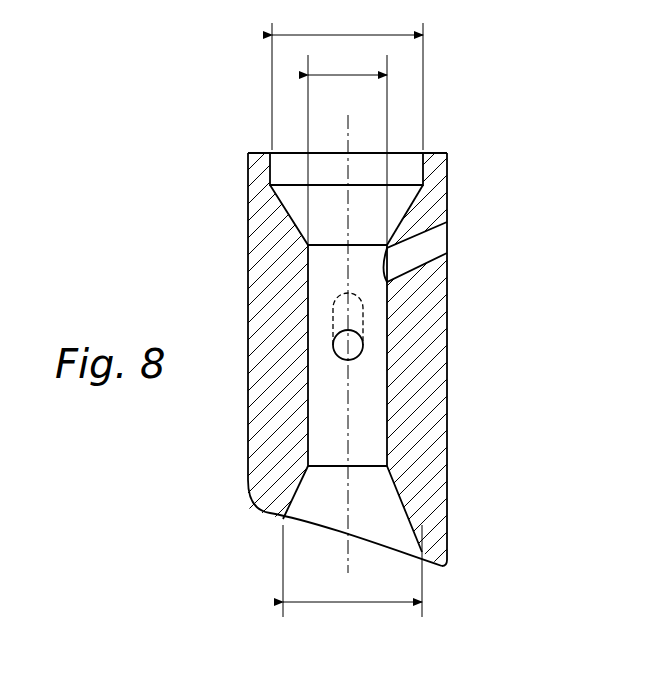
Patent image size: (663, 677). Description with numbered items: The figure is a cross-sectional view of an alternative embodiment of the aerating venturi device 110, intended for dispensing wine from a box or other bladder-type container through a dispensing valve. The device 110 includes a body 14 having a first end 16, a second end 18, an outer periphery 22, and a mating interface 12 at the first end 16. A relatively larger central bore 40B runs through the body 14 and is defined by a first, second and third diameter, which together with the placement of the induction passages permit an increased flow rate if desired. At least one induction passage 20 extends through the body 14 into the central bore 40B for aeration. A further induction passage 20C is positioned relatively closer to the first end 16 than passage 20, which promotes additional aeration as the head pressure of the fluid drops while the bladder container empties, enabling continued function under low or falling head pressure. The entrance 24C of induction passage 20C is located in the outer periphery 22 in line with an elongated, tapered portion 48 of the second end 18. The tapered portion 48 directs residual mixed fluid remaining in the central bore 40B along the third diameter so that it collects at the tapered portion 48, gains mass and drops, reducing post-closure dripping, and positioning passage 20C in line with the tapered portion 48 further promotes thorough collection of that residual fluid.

The alternative embodiment venturi device 110 is at (190, 262).
The first end 16 is at (258, 150).
The mating interface 12 is at (277, 185).
The body 14 is at (258, 408).
The central bore 40B is at (318, 438).
The second end 18 is at (270, 515).
The tapered portion 48 is at (430, 566).
The induction passage 20 is at (360, 337).
The induction passage 20C is at (437, 243).
The entrance 24C is at (448, 230).
The outer periphery 22 is at (448, 408).